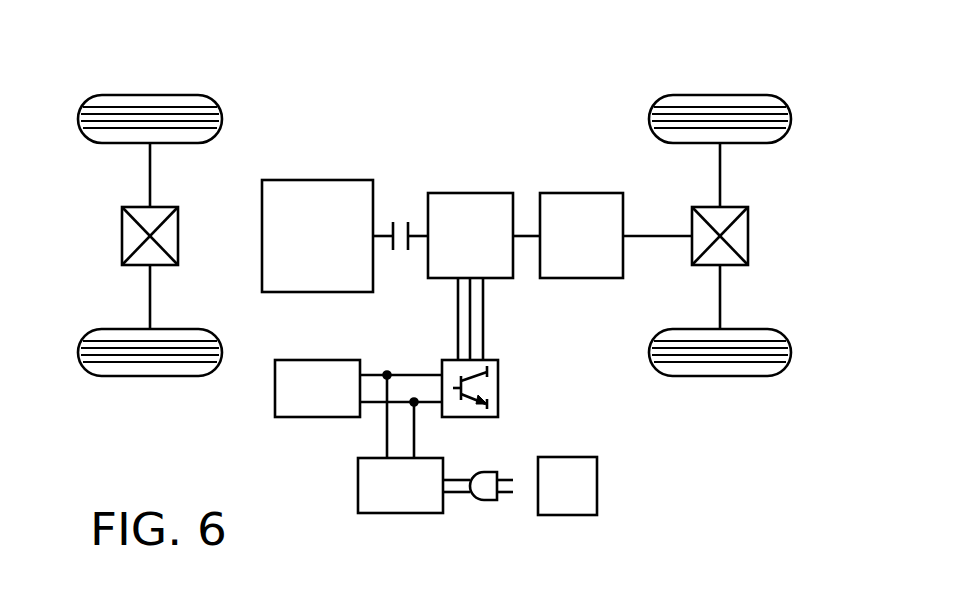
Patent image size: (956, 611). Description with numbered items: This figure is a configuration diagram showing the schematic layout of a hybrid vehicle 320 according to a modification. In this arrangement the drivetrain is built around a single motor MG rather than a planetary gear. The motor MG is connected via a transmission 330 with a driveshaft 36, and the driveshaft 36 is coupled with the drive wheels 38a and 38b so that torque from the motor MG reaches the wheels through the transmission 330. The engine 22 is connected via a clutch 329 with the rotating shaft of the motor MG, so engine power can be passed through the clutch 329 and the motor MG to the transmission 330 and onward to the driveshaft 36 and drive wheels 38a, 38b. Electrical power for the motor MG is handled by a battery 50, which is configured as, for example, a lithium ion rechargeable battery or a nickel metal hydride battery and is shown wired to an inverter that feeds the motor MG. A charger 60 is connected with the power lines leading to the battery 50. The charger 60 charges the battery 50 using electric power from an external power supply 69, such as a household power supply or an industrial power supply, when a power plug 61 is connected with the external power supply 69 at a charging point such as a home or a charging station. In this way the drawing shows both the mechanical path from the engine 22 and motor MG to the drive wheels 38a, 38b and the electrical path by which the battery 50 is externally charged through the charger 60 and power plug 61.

The hybrid vehicle 320 is at (588, 82).
The engine 22 is at (318, 180).
The clutch 329 is at (402, 222).
The motor MG is at (470, 193).
The transmission 330 is at (582, 193).
The driveshaft 36 is at (652, 233).
The drive wheel 38a is at (720, 93).
The drive wheel 38b is at (720, 376).
The battery 50 is at (318, 360).
The charger 60 is at (400, 513).
The power plug 61 is at (493, 500).
The external power supply 69 is at (567, 515).